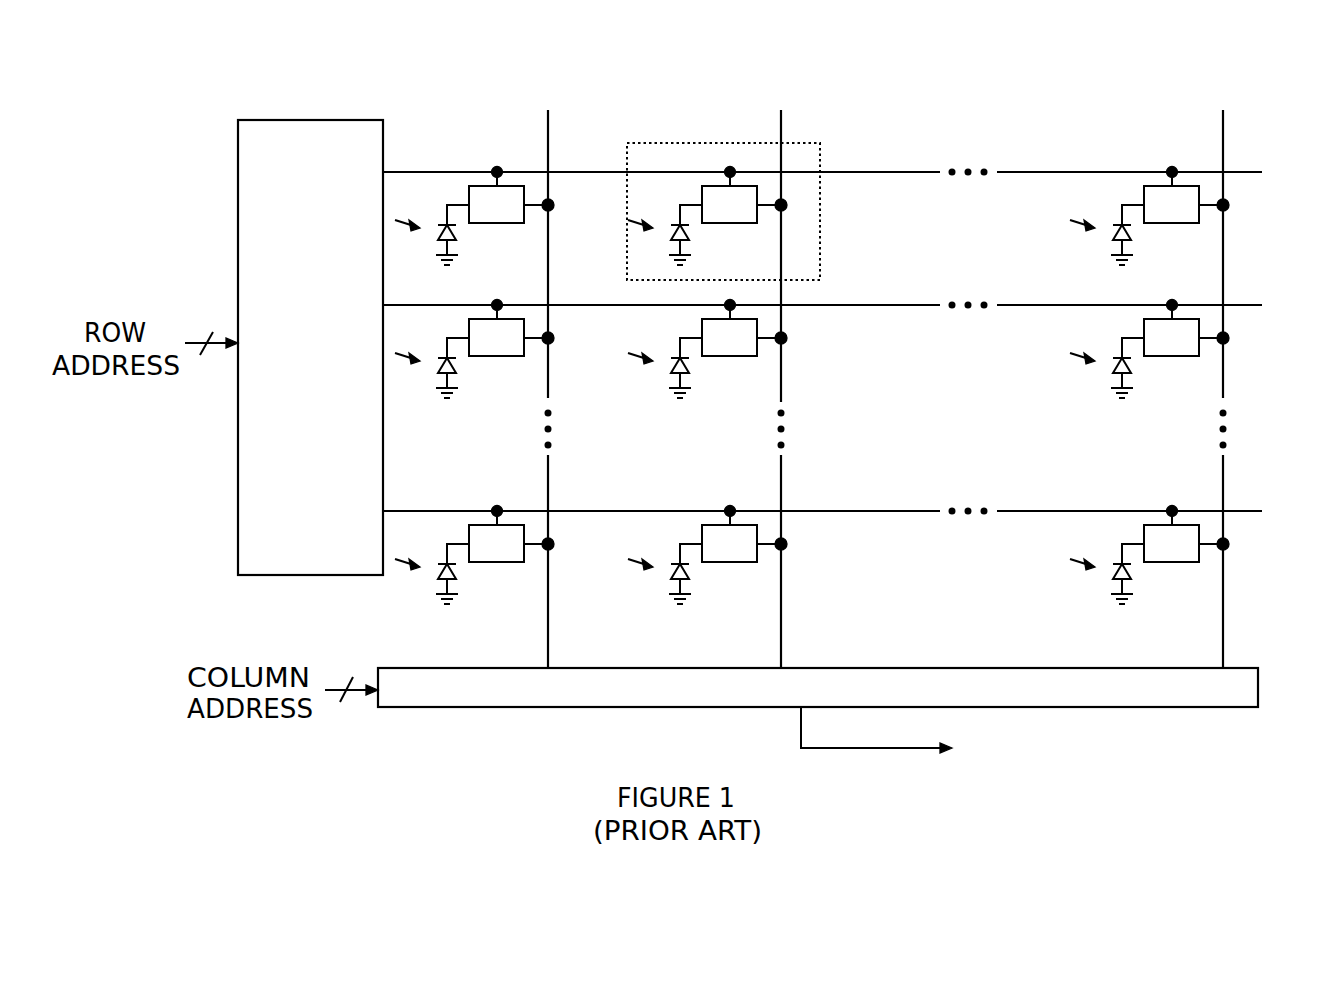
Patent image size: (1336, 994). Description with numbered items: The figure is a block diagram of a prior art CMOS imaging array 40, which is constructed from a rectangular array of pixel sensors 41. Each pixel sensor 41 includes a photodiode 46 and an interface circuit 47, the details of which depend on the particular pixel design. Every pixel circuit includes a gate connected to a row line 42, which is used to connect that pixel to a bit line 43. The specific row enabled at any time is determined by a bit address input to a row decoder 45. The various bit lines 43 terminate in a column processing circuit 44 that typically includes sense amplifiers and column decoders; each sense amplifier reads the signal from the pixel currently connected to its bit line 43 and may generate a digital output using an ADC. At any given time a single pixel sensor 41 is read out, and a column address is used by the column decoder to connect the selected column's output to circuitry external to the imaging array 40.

The imaging array 40 is at (156, 104).
The pixel sensor 41 is at (688, 142).
The row line 42 is at (872, 172).
The bit line 43 is at (549, 487).
The column processing circuit 44 is at (903, 665).
The row decoder 45 is at (323, 118).
The photodiode 46 is at (470, 239).
The interface circuit 47 is at (507, 173).